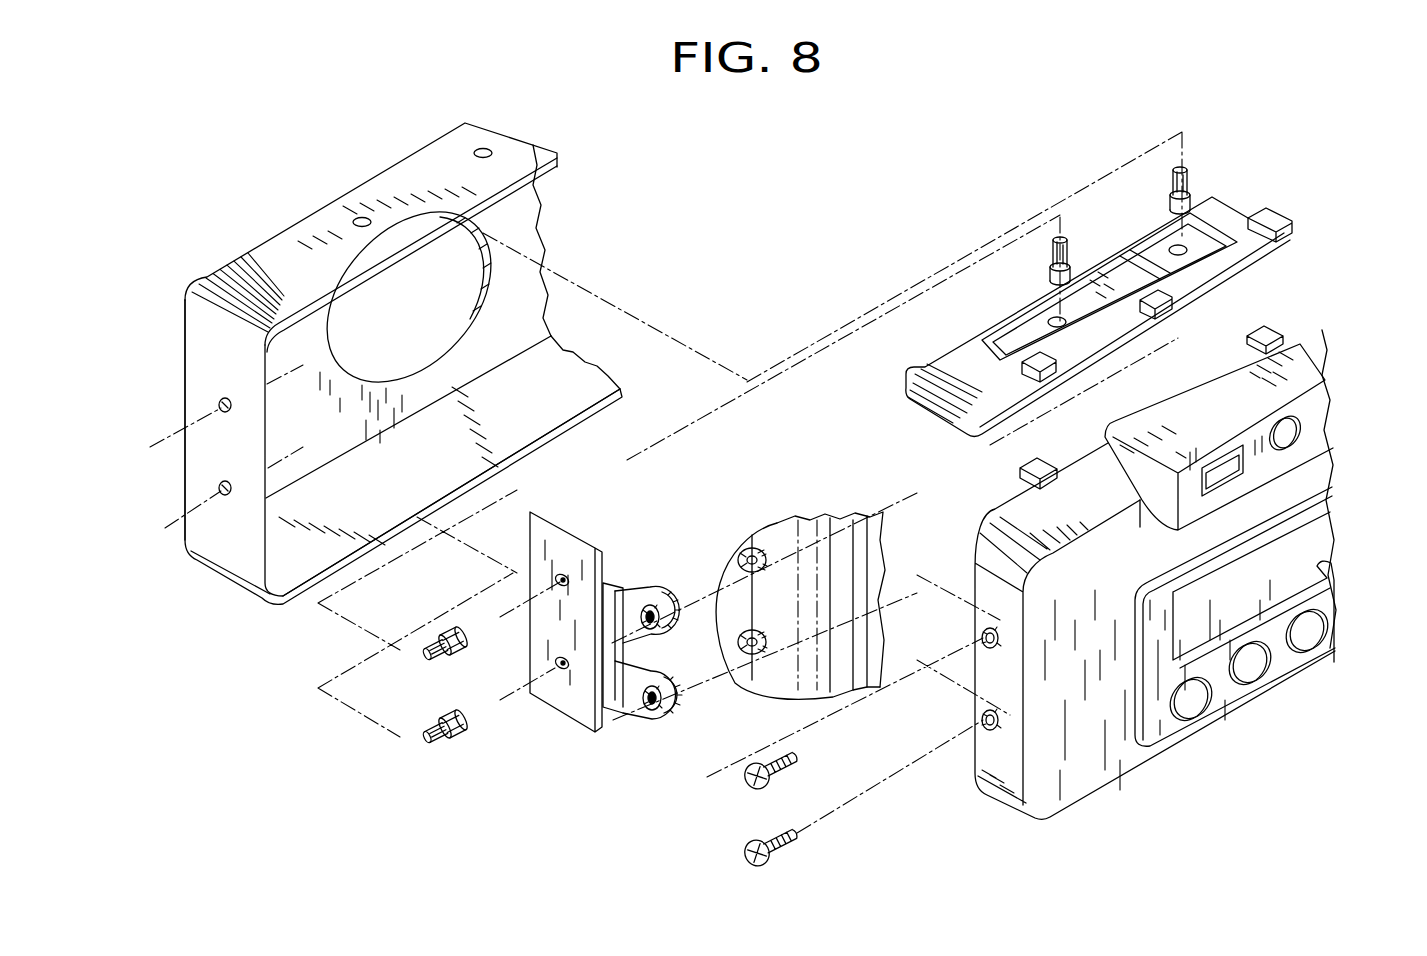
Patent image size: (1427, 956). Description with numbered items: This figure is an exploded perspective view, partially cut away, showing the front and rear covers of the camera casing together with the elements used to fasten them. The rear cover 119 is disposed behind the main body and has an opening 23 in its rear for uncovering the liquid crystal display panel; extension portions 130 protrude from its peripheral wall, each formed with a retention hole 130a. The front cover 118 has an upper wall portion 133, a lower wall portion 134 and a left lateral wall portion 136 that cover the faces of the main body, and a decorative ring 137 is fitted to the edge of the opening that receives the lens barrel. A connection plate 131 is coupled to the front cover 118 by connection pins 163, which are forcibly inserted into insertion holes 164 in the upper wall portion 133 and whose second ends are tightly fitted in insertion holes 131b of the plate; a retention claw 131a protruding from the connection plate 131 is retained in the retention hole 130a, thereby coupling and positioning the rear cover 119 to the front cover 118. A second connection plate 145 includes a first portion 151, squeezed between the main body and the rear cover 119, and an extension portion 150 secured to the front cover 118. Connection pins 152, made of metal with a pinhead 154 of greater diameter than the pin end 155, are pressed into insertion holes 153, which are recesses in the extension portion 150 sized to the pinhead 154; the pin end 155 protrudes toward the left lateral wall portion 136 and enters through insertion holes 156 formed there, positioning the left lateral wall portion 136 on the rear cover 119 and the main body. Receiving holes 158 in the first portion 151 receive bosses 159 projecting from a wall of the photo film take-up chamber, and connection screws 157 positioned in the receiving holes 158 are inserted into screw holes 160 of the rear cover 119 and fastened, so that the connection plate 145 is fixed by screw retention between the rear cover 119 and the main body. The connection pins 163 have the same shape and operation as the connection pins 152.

The opening 23 is at (1318, 572).
The front cover 118 is at (394, 356).
The rear cover 119 is at (1193, 579).
The extension portions 130 is at (1147, 402).
The retention hole 130a is at (1285, 340).
The connection plate 131 is at (1084, 307).
The retention claw 131a is at (1272, 247).
The insertion holes 131b is at (1049, 320).
The upper wall portion 133 is at (410, 228).
The lower wall portion 134 is at (577, 395).
The left lateral wall portion 136 is at (262, 420).
The decorative ring 137 is at (455, 328).
The connection plate 145 is at (767, 459).
The extension portion 150 is at (514, 593).
The first portion 151 is at (678, 657).
The connection pins 152 is at (414, 705).
The insertion holes 153 is at (554, 580).
The pinhead 154 is at (477, 694).
The pin end 155 is at (436, 645).
The insertion holes 156 is at (219, 405).
The connection screws 157 is at (790, 762).
The receiving holes 158 is at (657, 606).
The bosses 159 is at (767, 559).
The screw holes 160 is at (999, 637).
The connection pins 163 is at (1066, 262).
The insertion holes 164 is at (361, 217).